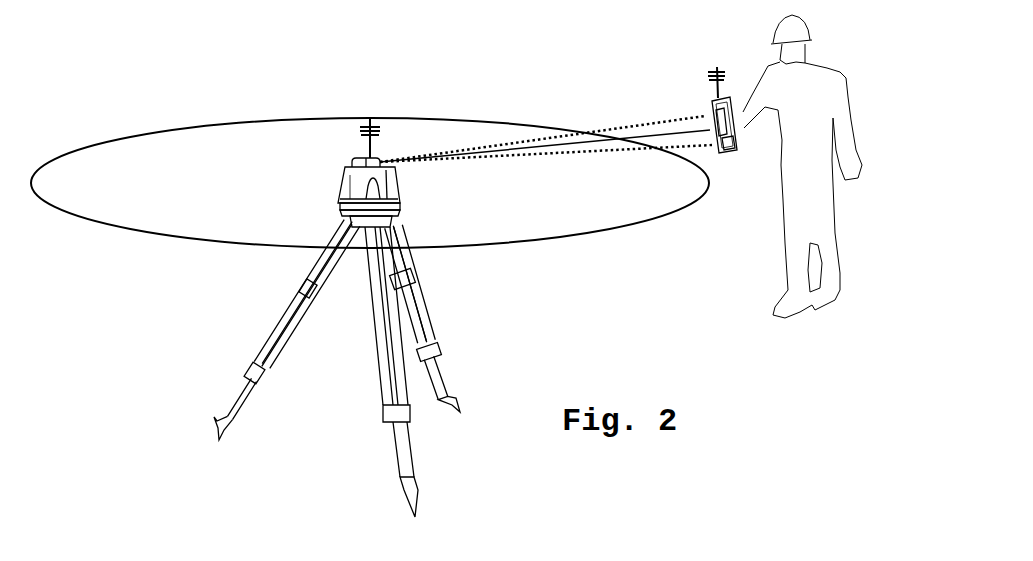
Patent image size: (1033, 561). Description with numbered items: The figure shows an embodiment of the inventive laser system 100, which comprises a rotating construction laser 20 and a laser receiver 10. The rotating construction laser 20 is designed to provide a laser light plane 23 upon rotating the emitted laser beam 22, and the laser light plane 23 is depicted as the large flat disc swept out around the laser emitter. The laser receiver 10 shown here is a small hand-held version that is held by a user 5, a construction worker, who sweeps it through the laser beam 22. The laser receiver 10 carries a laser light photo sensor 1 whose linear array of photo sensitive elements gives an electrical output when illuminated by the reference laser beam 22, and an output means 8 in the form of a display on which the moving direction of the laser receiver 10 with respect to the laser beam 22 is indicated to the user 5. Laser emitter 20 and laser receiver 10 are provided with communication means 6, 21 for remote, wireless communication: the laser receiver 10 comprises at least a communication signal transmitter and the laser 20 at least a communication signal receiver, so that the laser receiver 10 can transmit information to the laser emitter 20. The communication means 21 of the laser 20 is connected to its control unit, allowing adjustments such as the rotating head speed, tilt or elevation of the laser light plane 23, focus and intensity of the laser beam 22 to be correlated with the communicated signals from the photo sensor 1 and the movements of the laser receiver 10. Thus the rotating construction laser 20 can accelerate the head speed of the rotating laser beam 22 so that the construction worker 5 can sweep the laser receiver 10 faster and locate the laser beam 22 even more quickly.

The laser system 100 is at (288, 103).
The laser light photo sensor 1 is at (706, 132).
The user 5 is at (842, 78).
The communication means 6 is at (720, 70).
The output means 8 is at (714, 118).
The laser receiver 10 is at (728, 155).
The rotating construction laser 20 is at (342, 185).
The communication means 21 is at (371, 121).
The laser beam 22 is at (487, 153).
The laser light plane 23 is at (573, 235).